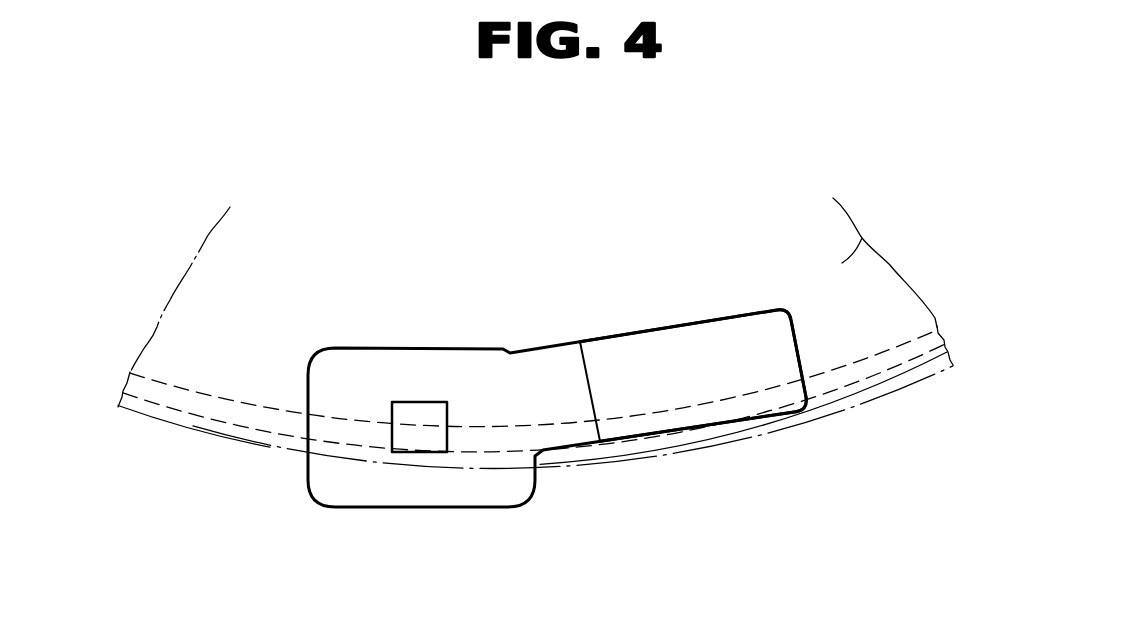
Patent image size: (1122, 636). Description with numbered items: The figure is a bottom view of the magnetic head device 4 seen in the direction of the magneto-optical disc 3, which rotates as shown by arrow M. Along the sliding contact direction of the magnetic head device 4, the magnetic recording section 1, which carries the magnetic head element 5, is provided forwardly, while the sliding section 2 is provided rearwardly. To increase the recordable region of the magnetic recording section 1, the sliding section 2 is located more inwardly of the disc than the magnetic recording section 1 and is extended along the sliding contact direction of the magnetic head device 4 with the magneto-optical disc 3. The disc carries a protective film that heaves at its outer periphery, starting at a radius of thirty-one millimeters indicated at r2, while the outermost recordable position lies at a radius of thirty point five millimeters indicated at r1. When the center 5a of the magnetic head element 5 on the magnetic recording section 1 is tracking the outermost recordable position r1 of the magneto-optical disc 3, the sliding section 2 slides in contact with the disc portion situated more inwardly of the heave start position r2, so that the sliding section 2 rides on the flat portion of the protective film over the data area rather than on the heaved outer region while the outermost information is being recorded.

The magnetic recording section 1 is at (484, 365).
The sliding section 2 is at (695, 338).
The magneto-optical disc 3 is at (862, 238).
The magnetic head device 4 is at (392, 338).
The magnetic head element 5 is at (408, 405).
The center of the magnetic head element 5a is at (418, 427).
The outermost recordable radius position r1 is at (114, 360).
The heave start position r2 is at (105, 386).
The direction of disc rotation M is at (888, 349).